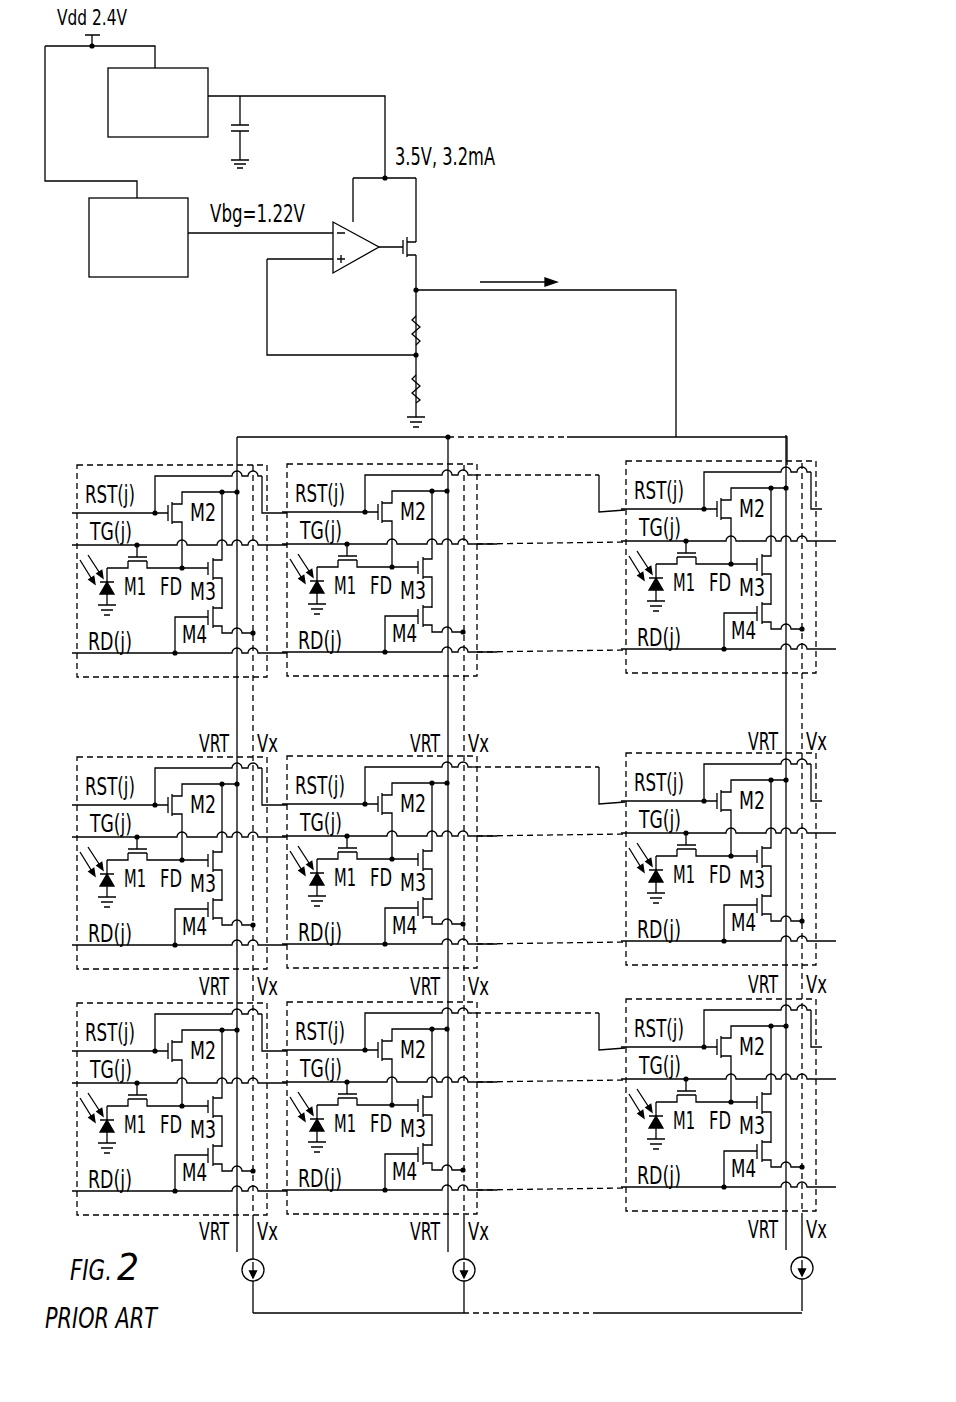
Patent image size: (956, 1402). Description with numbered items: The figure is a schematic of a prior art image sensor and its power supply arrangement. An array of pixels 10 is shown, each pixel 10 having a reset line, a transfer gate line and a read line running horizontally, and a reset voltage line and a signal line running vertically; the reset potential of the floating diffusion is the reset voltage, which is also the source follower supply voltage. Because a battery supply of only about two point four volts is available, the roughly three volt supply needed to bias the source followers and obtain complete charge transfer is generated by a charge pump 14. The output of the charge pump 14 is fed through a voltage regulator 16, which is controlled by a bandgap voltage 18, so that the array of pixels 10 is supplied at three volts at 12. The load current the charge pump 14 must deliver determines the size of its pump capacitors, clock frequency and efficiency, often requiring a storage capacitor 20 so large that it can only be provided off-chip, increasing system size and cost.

The pixel 10 is at (808, 607).
The 3V supply 12 is at (676, 330).
The charge pump 14 is at (196, 68).
The voltage regulator 16 is at (272, 284).
The bandgap voltage 18 is at (145, 267).
The storage capacitor 20 is at (244, 120).